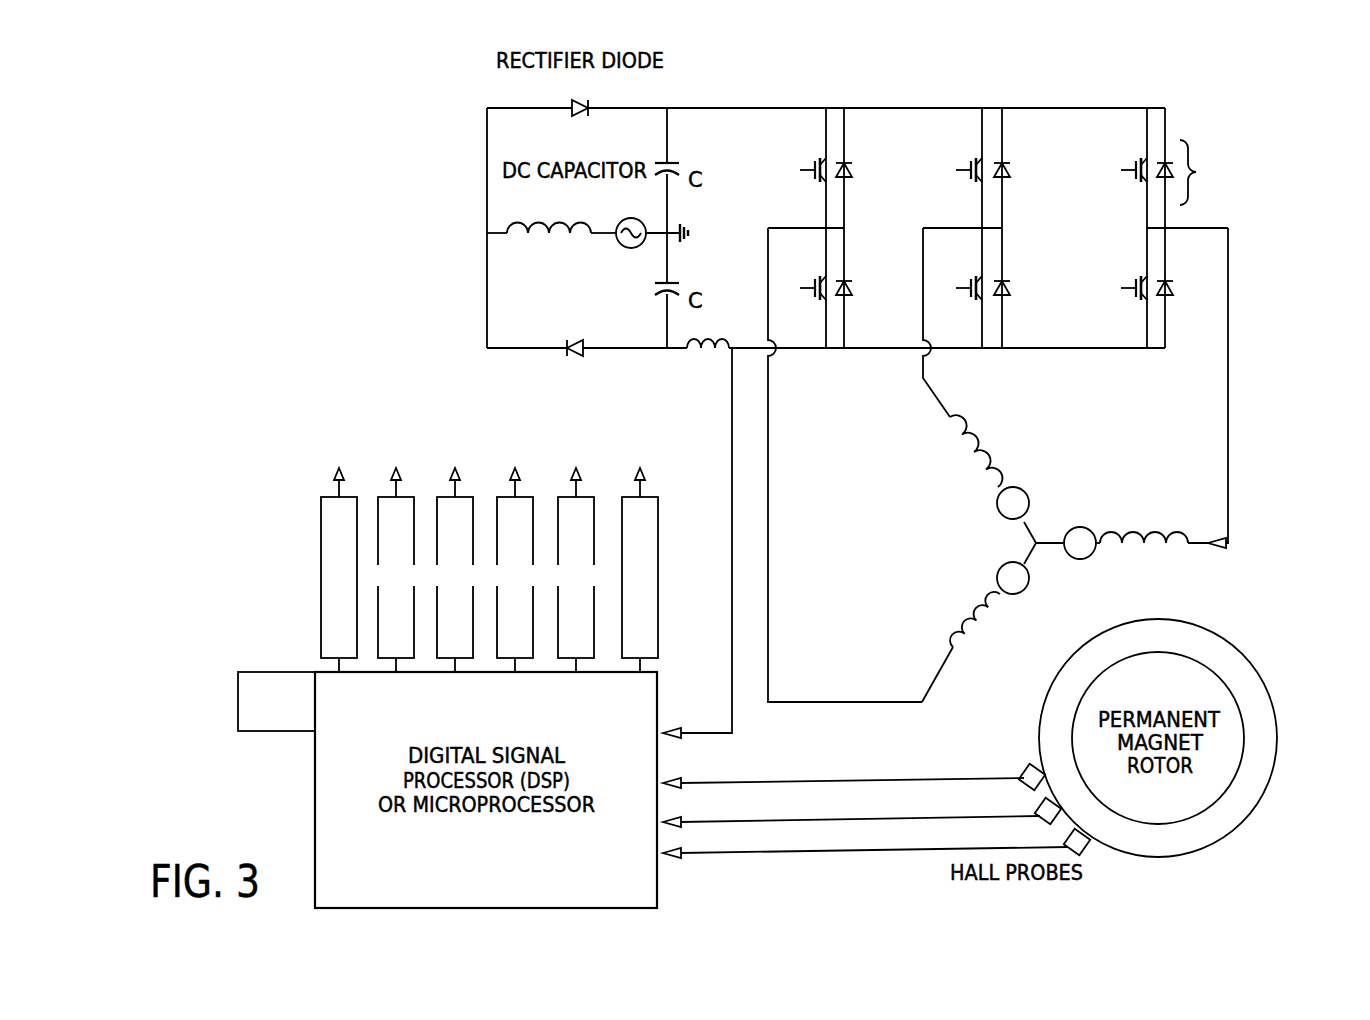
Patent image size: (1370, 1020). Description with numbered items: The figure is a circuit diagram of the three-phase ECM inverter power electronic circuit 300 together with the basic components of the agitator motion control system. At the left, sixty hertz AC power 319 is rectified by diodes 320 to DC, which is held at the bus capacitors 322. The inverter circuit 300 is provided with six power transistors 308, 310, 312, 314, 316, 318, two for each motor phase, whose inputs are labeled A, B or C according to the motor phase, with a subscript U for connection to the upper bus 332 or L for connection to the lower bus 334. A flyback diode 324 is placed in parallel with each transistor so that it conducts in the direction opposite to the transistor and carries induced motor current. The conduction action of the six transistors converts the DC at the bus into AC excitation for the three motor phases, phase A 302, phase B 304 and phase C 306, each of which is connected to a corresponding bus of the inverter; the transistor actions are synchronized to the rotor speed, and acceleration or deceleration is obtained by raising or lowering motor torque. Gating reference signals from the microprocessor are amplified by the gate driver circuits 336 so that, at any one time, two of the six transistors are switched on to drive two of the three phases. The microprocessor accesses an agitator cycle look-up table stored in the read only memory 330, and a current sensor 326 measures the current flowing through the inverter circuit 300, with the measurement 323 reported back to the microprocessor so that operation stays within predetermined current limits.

The ECM inverter power electronic circuit 300 is at (1013, 379).
The phase A of the ECM 302 is at (1127, 522).
The phase B of the ECM 304 is at (950, 430).
The phase C of the ECM 306 is at (963, 629).
The power transistor 308 is at (1134, 148).
The power transistor 310 is at (1136, 268).
The power transistor 312 is at (972, 152).
The power transistor 314 is at (974, 270).
The power transistor 316 is at (810, 152).
The power transistor 318 is at (814, 270).
The AC power 319 is at (587, 245).
The diodes 320 is at (540, 367).
The bus capacitors 322 is at (698, 150).
The current measurement signal line 323 is at (657, 758).
The flyback diode 324 is at (844, 405).
The current sensor 326 is at (669, 357).
The read only memory (ROM) 330 is at (286, 672).
The upper bus 332 is at (895, 108).
The lower bus 334 is at (868, 350).
The gate driver circuits 336 is at (508, 493).